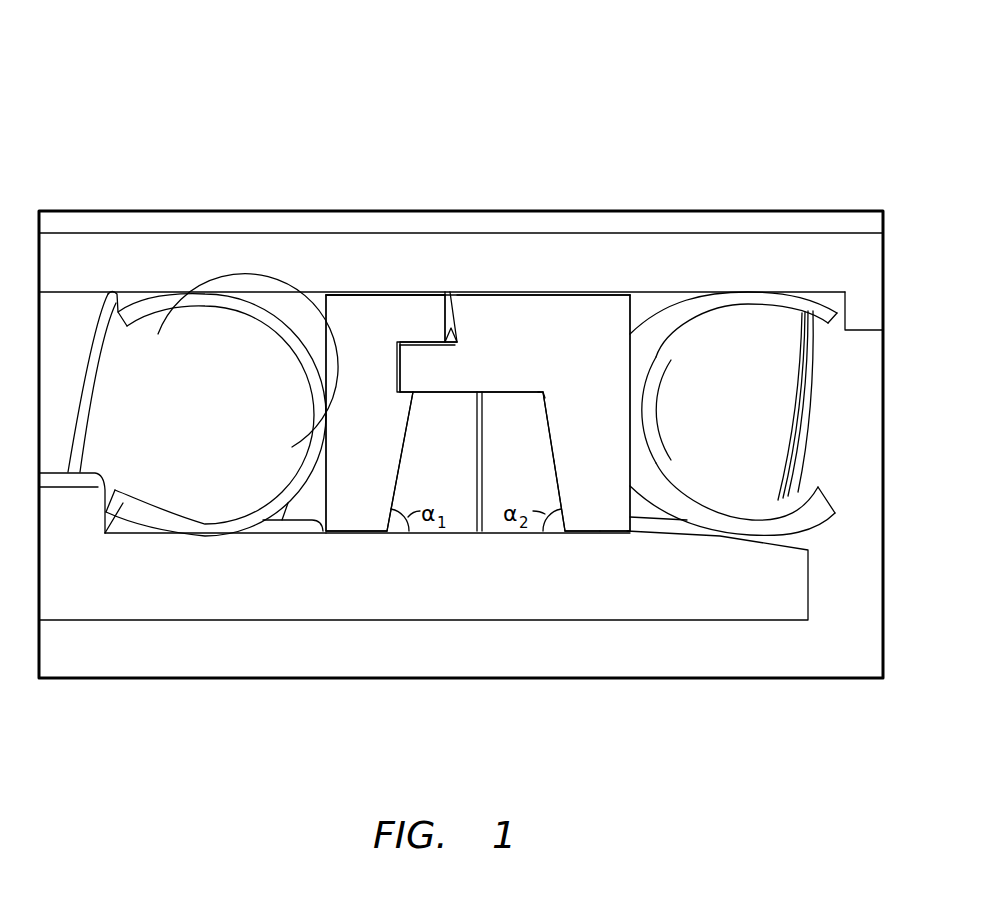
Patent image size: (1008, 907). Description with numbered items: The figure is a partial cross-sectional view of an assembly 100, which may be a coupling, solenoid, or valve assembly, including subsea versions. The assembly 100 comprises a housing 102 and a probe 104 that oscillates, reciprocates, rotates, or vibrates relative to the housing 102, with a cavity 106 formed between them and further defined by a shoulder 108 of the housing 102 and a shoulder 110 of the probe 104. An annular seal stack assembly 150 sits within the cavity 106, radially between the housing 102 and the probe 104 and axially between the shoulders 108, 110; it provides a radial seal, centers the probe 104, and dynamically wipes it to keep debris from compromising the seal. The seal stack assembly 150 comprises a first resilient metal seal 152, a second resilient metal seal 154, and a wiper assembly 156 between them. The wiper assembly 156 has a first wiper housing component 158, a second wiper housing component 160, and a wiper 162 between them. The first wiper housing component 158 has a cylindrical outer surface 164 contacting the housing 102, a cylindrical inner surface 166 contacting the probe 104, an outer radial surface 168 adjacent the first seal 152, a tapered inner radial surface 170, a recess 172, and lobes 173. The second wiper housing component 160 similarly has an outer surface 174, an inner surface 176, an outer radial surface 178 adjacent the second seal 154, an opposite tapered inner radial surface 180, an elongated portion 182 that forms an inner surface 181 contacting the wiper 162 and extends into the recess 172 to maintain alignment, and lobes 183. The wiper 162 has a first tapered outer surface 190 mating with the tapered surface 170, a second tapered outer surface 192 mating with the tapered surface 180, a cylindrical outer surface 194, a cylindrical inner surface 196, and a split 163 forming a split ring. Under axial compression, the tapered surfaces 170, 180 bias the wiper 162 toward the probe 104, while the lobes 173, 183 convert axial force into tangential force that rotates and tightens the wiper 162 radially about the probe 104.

The assembly 100 is at (719, 70).
The housing 102 is at (405, 247).
The probe 104 is at (222, 603).
The cavity 106 is at (65, 300).
The shoulder 108 is at (835, 305).
The shoulder 110 is at (118, 522).
The seal stack assembly 150 is at (553, 284).
The first resilient metal seal 152 is at (247, 296).
The second resilient metal seal 154 is at (703, 293).
The wiper assembly 156 is at (343, 543).
The first wiper housing component 158 is at (412, 284).
The second wiper housing component 160 is at (513, 284).
The wiper 162 is at (510, 542).
The split 163 is at (478, 507).
The outer surface 164 is at (350, 294).
The inner surface 166 is at (374, 534).
The outer radial surface 168 is at (326, 343).
The tapered inner radial surface 170 is at (402, 461).
The recess 172 is at (408, 343).
The lobes 173 is at (455, 334).
The outer surface 174 is at (585, 294).
The inner surface 176 is at (612, 534).
The outer radial surface 178 is at (633, 345).
The tapered inner radial surface 180 is at (548, 438).
The inner surface 181 is at (543, 393).
The elongated portion 182 is at (397, 372).
The lobes 183 is at (453, 307).
The first tapered outer surface 190 is at (394, 490).
The second tapered outer surface 192 is at (562, 481).
The outer surface 194 is at (498, 392).
The inner surface 196 is at (562, 534).